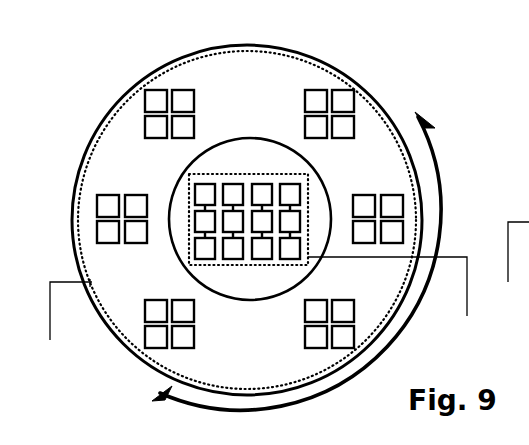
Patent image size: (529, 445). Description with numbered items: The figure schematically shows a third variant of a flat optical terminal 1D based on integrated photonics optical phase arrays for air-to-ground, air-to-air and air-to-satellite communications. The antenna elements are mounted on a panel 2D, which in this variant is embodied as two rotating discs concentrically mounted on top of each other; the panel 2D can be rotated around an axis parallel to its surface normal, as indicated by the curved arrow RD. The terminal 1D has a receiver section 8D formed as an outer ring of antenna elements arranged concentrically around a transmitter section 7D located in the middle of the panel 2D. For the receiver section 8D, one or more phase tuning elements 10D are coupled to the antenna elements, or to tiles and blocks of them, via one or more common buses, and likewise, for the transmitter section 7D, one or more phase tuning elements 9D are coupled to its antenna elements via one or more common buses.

The flat optical terminal 1D is at (111, 57).
The panel 2D is at (350, 72).
The transmitter section 7D is at (257, 148).
The receiver section 8D is at (272, 92).
The phase tuning elements 9D is at (458, 257).
The phase tuning elements 10D is at (62, 283).
The rotation direction RD is at (441, 167).